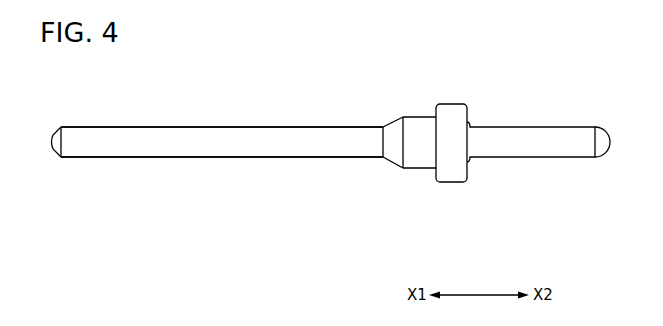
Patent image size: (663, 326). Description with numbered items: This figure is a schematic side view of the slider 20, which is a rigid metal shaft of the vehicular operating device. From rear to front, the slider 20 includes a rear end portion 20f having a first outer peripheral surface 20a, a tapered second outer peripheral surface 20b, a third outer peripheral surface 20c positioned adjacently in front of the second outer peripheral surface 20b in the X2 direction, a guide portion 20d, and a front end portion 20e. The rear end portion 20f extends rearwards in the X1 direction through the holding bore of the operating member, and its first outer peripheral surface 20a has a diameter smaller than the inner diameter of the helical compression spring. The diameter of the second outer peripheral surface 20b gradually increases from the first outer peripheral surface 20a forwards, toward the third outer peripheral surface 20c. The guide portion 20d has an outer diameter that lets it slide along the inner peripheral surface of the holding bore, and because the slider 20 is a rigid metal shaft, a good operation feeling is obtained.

The slider 20 is at (193, 100).
The first outer peripheral surface 20a is at (256, 152).
The second outer peripheral surface 20b is at (392, 120).
The third outer peripheral surface 20c is at (422, 170).
The guide portion 20d is at (452, 120).
The front end portion 20e is at (580, 142).
The rear end portion 20f is at (129, 145).